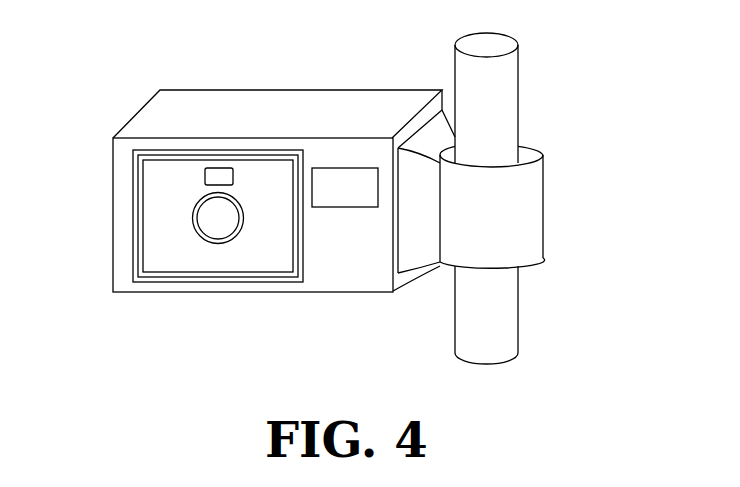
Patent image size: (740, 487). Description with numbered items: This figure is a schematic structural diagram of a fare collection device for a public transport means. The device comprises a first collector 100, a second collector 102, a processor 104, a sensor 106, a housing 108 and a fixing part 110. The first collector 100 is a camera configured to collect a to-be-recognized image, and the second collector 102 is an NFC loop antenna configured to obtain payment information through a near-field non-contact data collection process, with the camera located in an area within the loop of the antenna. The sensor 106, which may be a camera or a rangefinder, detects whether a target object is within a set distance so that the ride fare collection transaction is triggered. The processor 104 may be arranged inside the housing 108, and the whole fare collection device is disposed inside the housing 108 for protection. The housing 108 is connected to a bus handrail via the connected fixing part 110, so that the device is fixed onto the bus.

The first collector 100 is at (195, 225).
The second collector 102 is at (132, 193).
The processor 104 is at (338, 165).
The sensor 106 is at (203, 178).
The housing 108 is at (172, 292).
The fixing part 110 is at (450, 190).